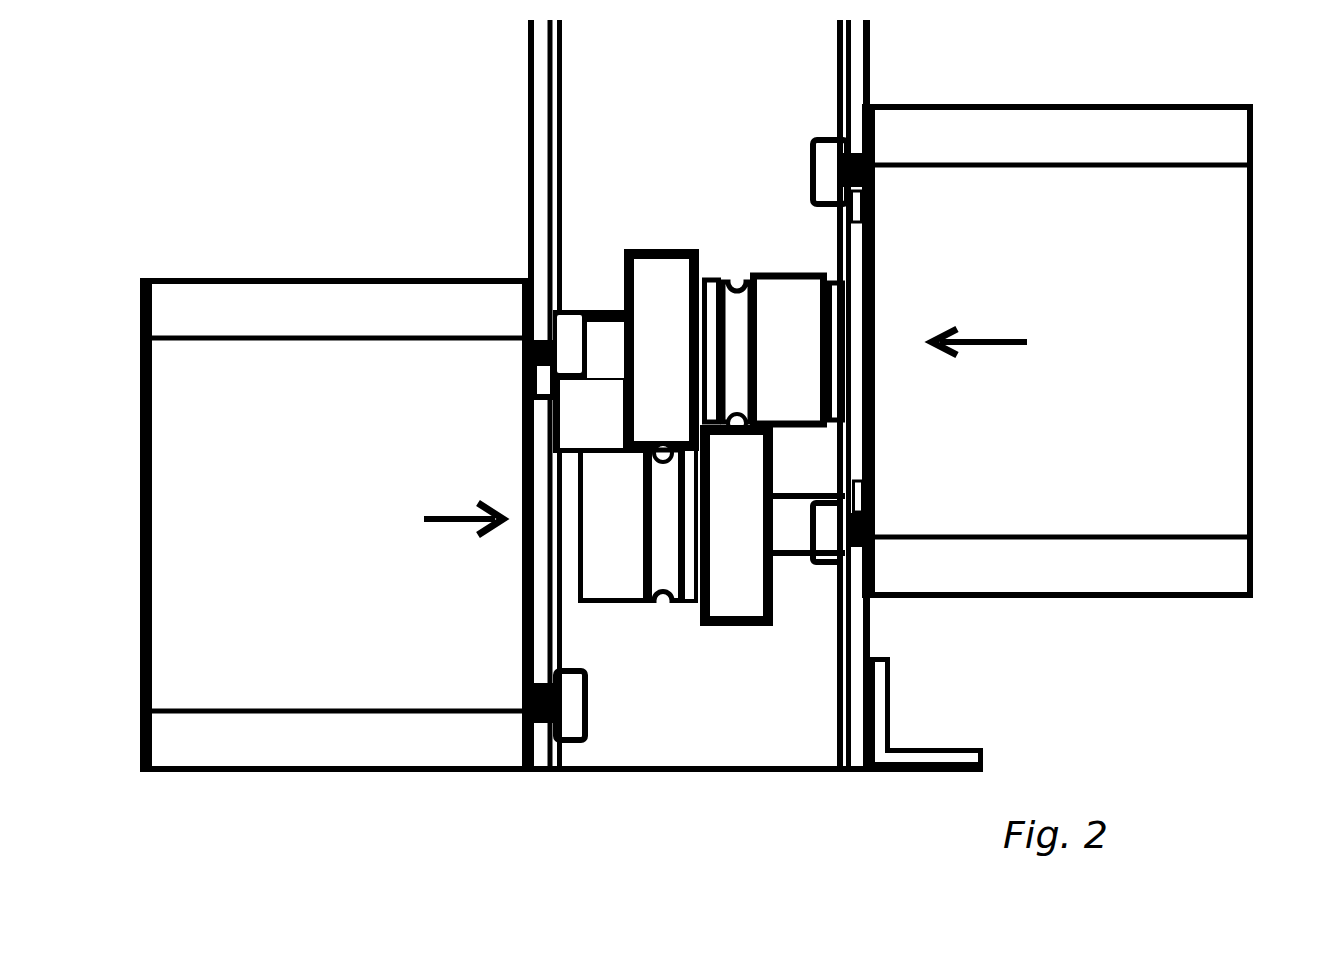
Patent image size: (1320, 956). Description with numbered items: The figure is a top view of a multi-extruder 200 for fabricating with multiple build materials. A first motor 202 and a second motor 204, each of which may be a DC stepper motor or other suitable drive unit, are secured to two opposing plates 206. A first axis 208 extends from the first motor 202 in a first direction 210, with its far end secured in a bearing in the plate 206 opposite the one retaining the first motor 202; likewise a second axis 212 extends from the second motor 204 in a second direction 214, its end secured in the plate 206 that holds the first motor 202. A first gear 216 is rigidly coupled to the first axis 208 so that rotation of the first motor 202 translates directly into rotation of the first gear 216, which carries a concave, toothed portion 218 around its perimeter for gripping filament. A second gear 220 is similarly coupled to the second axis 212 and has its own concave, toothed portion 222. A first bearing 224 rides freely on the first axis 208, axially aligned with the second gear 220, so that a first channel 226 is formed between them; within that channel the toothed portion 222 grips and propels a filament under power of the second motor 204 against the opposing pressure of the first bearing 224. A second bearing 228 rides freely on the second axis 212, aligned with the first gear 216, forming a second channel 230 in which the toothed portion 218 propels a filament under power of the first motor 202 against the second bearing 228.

The multi-extruder 200 is at (314, 153).
The first motor 202 is at (337, 525).
The second motor 204 is at (1057, 352).
The opposing plates 206 is at (528, 83).
The first axis 208 is at (800, 557).
The first direction 210 is at (457, 508).
The second axis 212 is at (605, 318).
The second direction 214 is at (980, 338).
The first gear 216 is at (613, 526).
The concave, toothed portion 218 is at (663, 606).
The second gear 220 is at (798, 350).
The concave, toothed portion 222 is at (737, 283).
The first bearing 224 is at (775, 625).
The first channel 226 is at (729, 440).
The second bearing 228 is at (655, 250).
The second channel 230 is at (656, 437).